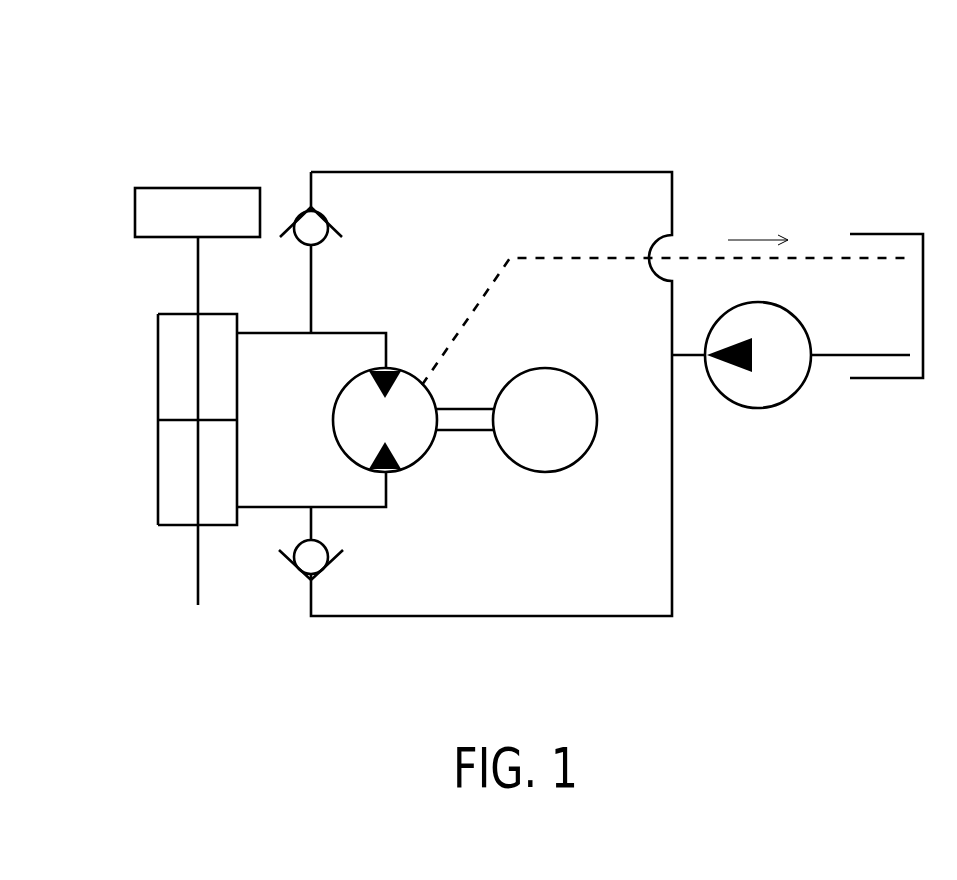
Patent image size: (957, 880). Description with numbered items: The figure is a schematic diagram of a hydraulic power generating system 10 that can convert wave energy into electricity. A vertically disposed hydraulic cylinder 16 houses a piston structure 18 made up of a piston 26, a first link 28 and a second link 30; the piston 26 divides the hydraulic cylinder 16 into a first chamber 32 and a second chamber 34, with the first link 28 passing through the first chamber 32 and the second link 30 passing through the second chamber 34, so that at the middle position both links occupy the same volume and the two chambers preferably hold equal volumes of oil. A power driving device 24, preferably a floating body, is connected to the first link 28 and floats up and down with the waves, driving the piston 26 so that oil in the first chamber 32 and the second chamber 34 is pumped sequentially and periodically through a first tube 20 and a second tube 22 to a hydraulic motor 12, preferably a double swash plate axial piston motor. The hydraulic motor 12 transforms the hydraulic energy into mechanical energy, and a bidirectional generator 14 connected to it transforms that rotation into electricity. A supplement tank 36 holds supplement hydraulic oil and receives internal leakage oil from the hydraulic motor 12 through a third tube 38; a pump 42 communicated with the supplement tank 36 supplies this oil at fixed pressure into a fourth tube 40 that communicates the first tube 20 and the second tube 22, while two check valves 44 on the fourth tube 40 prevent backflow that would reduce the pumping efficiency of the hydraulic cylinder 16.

The hydraulic power generating system 10 is at (708, 100).
The hydraulic motor 12 is at (418, 465).
The bidirectional generator 14 is at (543, 473).
The hydraulic cylinder 16 is at (158, 332).
The piston structure 18 is at (187, 278).
The first tube 20 is at (352, 333).
The second tube 22 is at (372, 509).
The power driving device 24 is at (147, 212).
The piston 26 is at (175, 421).
The first link 28 is at (197, 345).
The second link 30 is at (197, 503).
The first chamber 32 is at (168, 382).
The second chamber 34 is at (168, 472).
The supplement tank 36 is at (885, 233).
The third tube 38 is at (573, 255).
The fourth tube 40 is at (673, 543).
The pump 42 is at (755, 409).
The check valve 44 is at (328, 218).